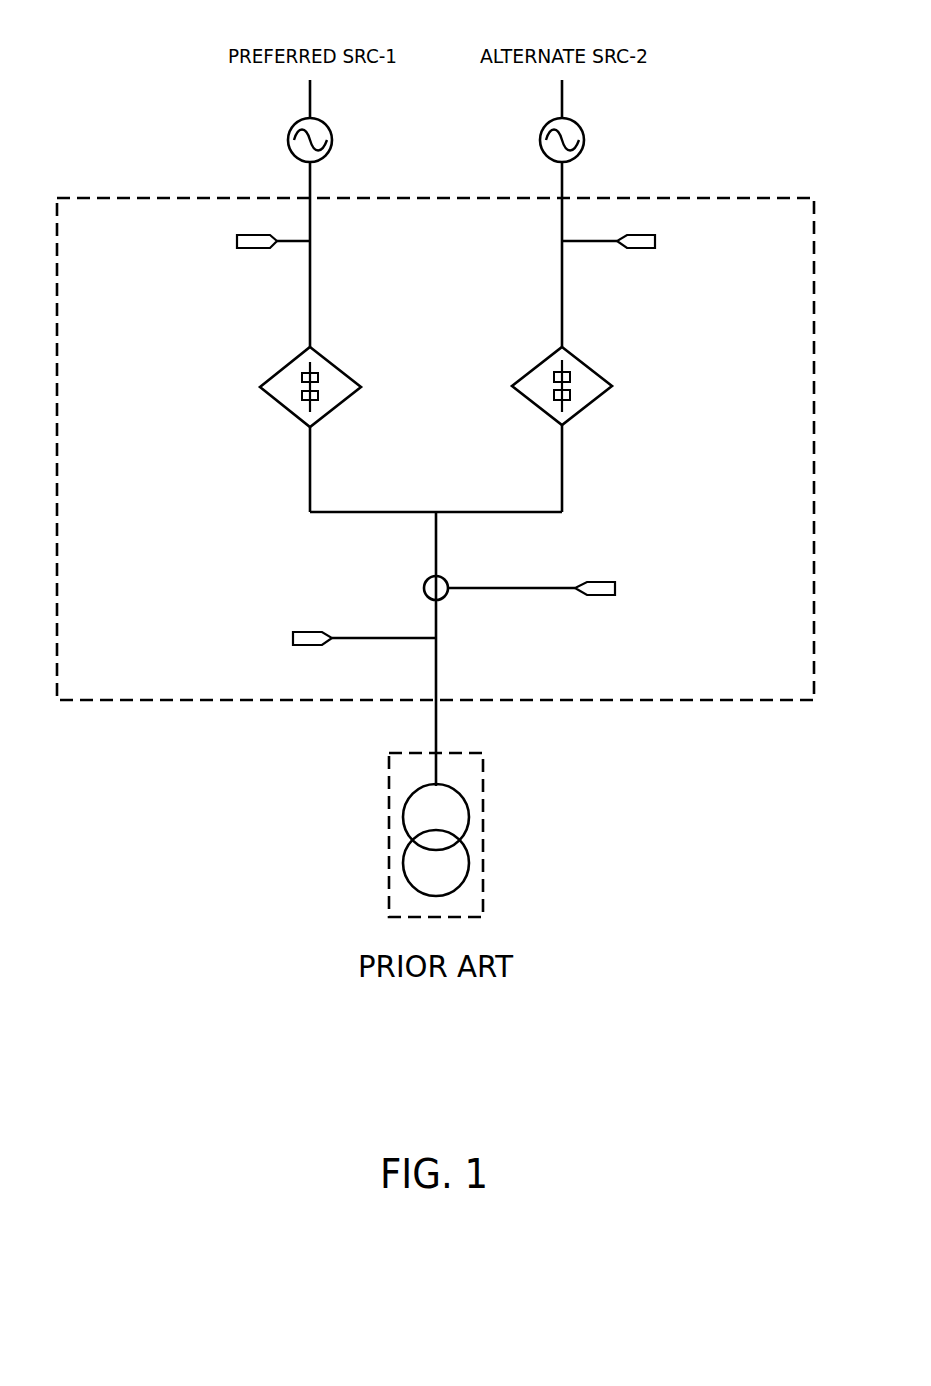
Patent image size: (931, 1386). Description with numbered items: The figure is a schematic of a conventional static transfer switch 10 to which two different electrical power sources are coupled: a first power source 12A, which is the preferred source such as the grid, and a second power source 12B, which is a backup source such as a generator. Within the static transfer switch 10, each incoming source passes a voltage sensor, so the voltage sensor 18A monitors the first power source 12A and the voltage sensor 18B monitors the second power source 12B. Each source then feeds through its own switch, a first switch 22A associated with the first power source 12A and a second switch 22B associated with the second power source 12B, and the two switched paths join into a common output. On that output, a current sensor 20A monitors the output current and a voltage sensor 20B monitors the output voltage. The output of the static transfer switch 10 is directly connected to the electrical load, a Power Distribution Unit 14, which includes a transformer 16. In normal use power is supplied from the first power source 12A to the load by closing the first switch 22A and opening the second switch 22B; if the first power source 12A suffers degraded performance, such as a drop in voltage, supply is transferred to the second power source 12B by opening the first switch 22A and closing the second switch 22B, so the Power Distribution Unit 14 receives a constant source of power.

The static transfer switch 10 is at (158, 170).
The first power source 12A is at (288, 140).
The second power source 12B is at (584, 140).
The Power Distribution Unit 14 is at (483, 771).
The transformer 16 is at (466, 832).
The voltage sensor 18A is at (247, 249).
The voltage sensor 18B is at (640, 249).
The current sensor 20A is at (598, 581).
The voltage sensor 20B is at (306, 631).
The first switch 22A is at (290, 361).
The second switch 22B is at (584, 360).